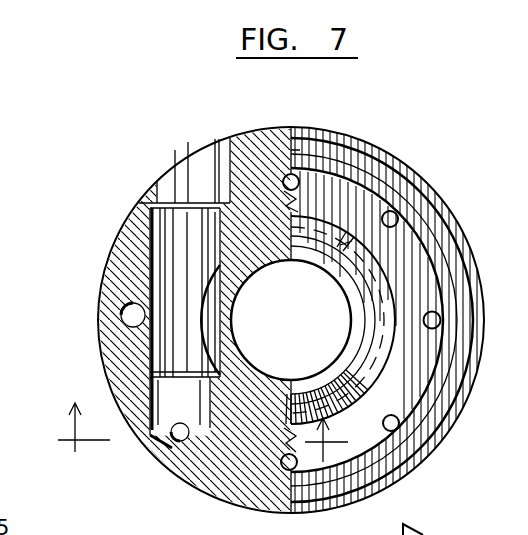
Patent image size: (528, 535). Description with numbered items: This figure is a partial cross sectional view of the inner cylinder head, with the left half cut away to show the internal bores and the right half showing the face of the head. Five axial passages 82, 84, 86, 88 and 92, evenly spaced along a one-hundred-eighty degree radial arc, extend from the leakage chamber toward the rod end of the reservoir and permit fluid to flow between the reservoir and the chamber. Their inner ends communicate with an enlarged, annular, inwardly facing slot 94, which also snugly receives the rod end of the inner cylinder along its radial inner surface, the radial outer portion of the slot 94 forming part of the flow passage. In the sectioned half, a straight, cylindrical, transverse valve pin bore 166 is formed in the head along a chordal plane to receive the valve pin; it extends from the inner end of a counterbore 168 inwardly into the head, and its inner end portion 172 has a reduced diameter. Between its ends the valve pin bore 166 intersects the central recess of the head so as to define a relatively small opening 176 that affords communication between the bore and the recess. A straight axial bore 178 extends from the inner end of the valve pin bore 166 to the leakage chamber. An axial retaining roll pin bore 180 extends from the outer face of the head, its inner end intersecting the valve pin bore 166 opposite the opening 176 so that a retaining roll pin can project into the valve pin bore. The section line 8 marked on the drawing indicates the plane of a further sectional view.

The counterbore 168 is at (207, 178).
The valve pin bore 166 is at (175, 243).
The opening 176 is at (213, 323).
The roll pin bore 180 is at (121, 321).
The inner end portion 172 is at (157, 425).
The axial bore 178 is at (178, 443).
The axial passage 82 is at (291, 181).
The axial passage 84 is at (391, 219).
The axial passage 86 is at (432, 320).
The axial passage 88 is at (392, 424).
The axial passage 92 is at (290, 470).
The section line 8- 8 is at (198, 432).
The slot 94 is at (446, 529).